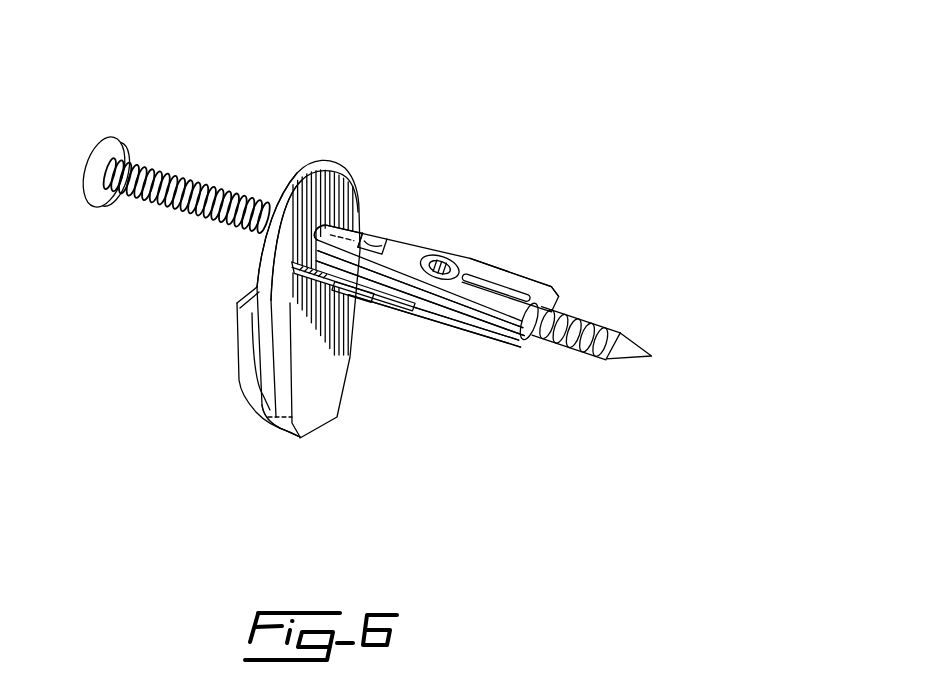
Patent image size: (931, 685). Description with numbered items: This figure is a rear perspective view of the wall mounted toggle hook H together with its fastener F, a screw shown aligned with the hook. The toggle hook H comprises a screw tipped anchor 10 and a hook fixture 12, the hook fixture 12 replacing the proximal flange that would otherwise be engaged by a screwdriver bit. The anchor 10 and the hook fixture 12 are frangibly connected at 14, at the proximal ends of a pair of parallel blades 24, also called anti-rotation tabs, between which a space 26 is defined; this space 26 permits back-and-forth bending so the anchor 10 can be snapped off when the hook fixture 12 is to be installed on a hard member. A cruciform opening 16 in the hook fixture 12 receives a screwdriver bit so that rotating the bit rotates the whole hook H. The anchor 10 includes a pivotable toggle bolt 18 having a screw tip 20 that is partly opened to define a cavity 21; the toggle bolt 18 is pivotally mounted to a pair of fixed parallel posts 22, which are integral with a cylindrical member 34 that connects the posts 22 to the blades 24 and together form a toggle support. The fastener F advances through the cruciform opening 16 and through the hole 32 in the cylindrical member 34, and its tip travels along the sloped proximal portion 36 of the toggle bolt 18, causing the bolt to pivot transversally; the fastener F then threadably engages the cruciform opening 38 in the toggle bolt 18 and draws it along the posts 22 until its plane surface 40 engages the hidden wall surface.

The fastener F is at (88, 130).
The screw tipped anchor 10 is at (433, 218).
The hook fixture 12 is at (226, 353).
The frangible connection 14 is at (272, 212).
The cruciform opening 16 is at (290, 210).
The toggle bolt 18 is at (568, 276).
The screw tip 20 is at (547, 357).
The cavity 21 is at (587, 320).
The fixed parallel posts 22 is at (487, 322).
The parallel blades 24 is at (345, 290).
The space 26 is at (290, 373).
The hole 32 is at (407, 253).
The cylindrical member 34 is at (397, 247).
The sloped proximal portion 36 is at (409, 262).
The cruciform opening 38 is at (438, 266).
The plane surface 40 is at (487, 267).
The wall mounted toggle hook H is at (600, 394).